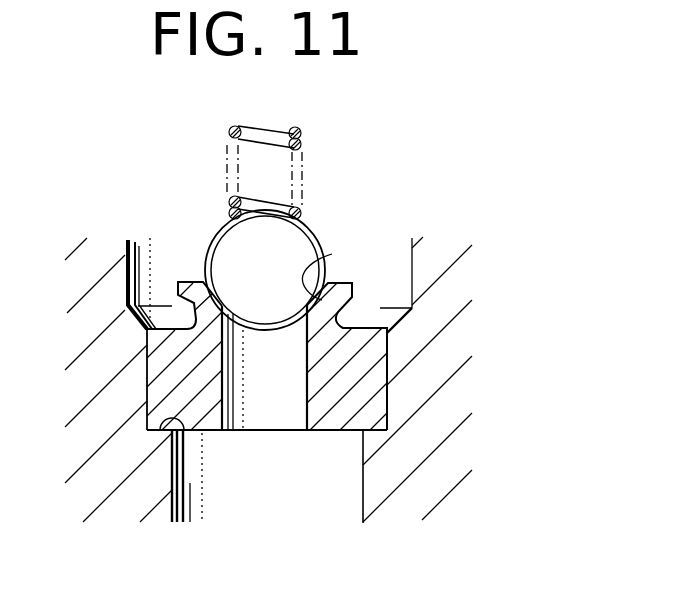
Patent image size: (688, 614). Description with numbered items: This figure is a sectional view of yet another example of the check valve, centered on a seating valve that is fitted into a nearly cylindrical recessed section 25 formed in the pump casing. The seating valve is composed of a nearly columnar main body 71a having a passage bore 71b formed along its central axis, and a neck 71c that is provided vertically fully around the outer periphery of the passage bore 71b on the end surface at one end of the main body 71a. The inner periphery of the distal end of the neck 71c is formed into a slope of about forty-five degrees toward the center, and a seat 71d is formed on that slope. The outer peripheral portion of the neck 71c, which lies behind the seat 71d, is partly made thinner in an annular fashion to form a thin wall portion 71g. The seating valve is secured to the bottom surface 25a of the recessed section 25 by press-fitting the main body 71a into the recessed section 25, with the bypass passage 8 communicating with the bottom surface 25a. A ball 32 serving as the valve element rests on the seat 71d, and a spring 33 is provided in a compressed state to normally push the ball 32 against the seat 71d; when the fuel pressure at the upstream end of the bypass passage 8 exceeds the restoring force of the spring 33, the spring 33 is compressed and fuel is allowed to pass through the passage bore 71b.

The bypass passage 8 is at (210, 498).
The recessed section 25 is at (137, 245).
The bottom surface 25a is at (186, 434).
The ball 32 is at (303, 229).
The spring 33 is at (299, 143).
The main body 71a is at (387, 404).
The passage bore 71b is at (308, 397).
The neck 71c is at (192, 283).
The seat 71d is at (342, 261).
The thin wall portion 71g is at (343, 314).